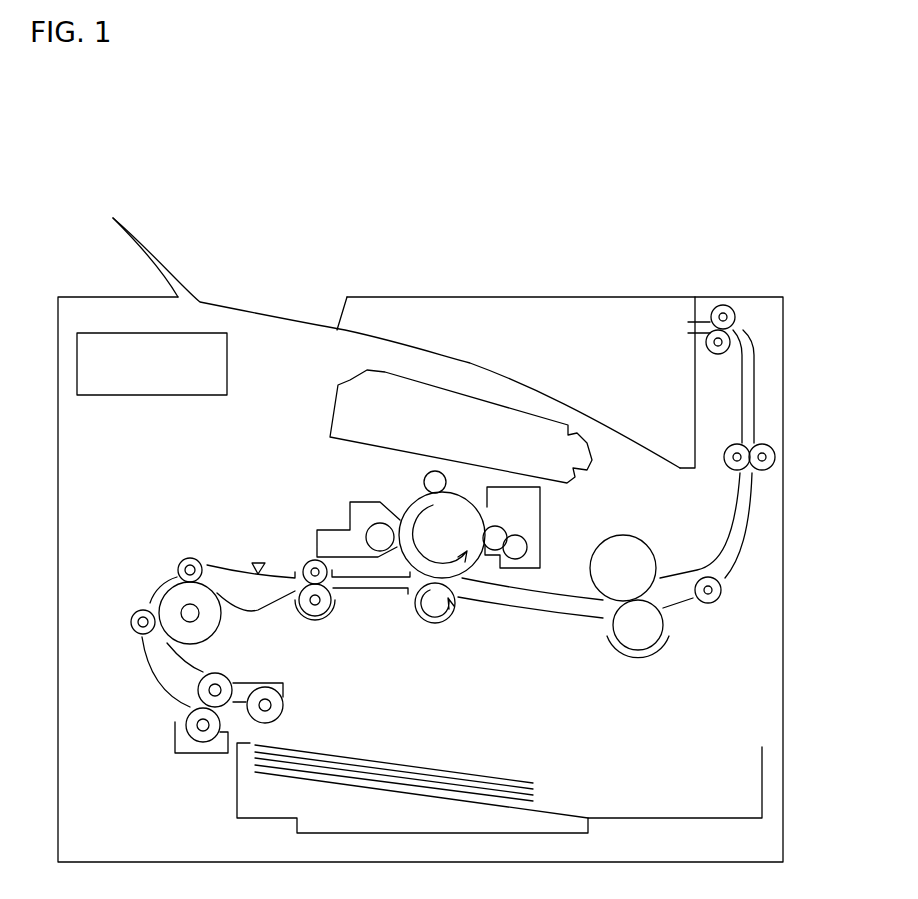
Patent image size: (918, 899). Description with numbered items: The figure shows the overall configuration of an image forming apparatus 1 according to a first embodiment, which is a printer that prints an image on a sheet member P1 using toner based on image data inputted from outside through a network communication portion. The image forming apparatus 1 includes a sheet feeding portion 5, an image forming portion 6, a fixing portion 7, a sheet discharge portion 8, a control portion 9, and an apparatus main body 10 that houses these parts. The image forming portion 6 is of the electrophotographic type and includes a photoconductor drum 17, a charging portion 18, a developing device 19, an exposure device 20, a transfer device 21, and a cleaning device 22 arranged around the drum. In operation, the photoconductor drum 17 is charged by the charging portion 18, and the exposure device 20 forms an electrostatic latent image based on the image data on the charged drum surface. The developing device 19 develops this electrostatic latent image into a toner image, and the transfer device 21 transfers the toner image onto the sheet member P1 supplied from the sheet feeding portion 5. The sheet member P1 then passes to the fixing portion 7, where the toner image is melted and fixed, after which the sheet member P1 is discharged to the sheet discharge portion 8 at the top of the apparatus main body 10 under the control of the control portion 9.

The image forming apparatus 1 is at (777, 263).
The sheet feeding portion 5 is at (169, 821).
The image forming portion 6 is at (401, 630).
The fixing portion 7 is at (597, 659).
The sheet discharge portion 8 is at (468, 363).
The control portion 9 is at (110, 397).
The apparatus main body 10 is at (783, 683).
The photoconductor drum 17 is at (417, 500).
The charging portion 18 is at (440, 471).
The developing device 19 is at (333, 530).
The exposure device 20 is at (338, 405).
The transfer device 21 is at (447, 620).
The cleaning device 22 is at (543, 522).
The sheet member P1 is at (445, 768).